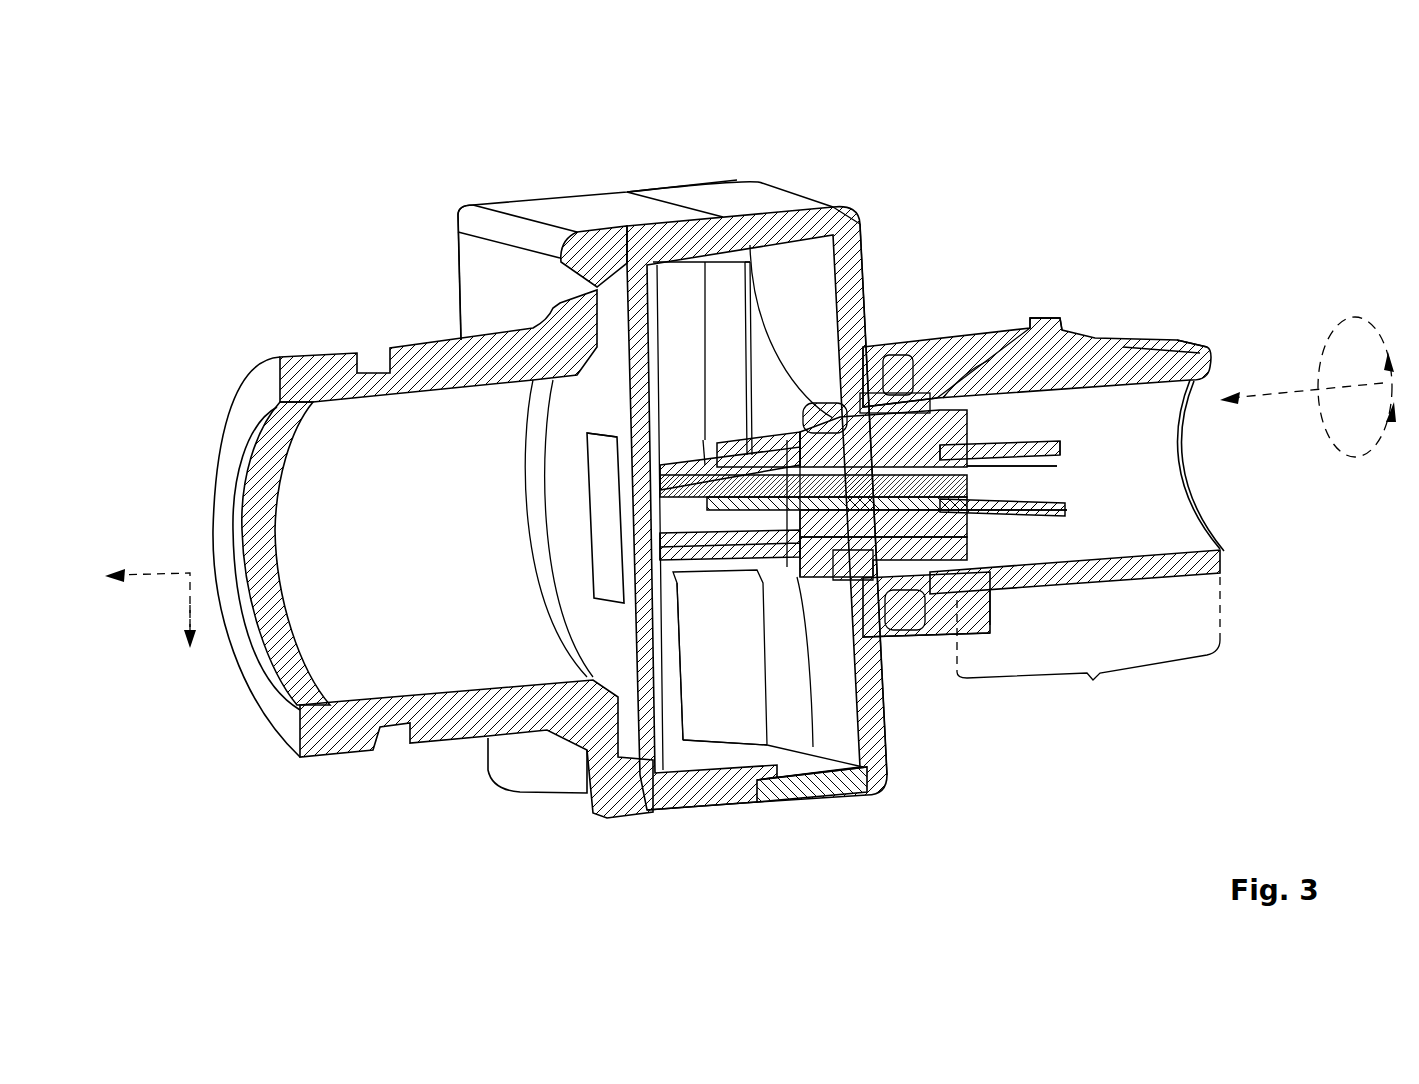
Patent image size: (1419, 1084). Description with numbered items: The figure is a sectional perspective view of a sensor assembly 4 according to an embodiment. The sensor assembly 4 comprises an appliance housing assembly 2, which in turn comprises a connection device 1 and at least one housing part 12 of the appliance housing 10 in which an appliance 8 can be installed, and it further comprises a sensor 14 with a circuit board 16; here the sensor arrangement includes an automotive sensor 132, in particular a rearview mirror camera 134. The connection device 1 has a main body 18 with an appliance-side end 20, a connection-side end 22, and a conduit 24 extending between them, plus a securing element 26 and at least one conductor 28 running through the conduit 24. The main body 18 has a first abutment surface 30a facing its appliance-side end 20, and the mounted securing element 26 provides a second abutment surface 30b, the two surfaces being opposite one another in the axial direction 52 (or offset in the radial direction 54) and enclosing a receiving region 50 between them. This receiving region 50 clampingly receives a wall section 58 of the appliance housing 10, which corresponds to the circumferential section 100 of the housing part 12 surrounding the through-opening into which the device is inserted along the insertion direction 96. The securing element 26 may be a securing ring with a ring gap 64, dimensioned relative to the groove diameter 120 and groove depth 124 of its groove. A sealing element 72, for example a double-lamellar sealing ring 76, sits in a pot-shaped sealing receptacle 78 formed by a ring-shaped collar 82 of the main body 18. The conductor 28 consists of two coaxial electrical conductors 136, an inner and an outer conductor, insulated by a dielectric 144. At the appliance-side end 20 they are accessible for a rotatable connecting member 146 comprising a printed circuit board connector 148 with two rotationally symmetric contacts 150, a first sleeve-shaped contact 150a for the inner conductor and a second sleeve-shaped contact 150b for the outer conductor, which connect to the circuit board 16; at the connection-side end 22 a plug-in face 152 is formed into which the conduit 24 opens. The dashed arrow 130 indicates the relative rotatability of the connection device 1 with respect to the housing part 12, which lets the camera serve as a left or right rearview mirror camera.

The connection device 1 is at (1107, 234).
The appliance housing assembly 2 is at (893, 142).
The sensor assembly 4 is at (166, 133).
The appliance 8 is at (598, 408).
The appliance housing 10 is at (630, 223).
The housing part 12 is at (858, 218).
The sensor 14 is at (286, 553).
The circuit board 16 is at (646, 762).
The main body 18 is at (980, 622).
The appliance-side end 20 is at (783, 368).
The connection-side end 22 is at (1166, 332).
The conduit 24 is at (952, 526).
The securing element 26 is at (752, 262).
The conductor 28 is at (1060, 443).
The first abutment surface 30a is at (900, 360).
The second abutment surface 30b is at (837, 413).
The receiving region 50 is at (1043, 327).
The axial direction 52 is at (157, 571).
The radial direction 54 is at (187, 602).
The wall section 58 is at (863, 307).
The ring gap 64 is at (833, 582).
The sealing element 72 is at (918, 640).
The double-lamellar sealing ring 76 is at (926, 635).
The pot-shaped sealing receptacle 78 is at (953, 357).
The ring-shaped collar 82 is at (900, 402).
The insertion direction 96 is at (1260, 390).
The circumferential section 100 is at (873, 499).
The groove diameter 120 is at (888, 470).
The groove depth 124 is at (1017, 588).
The dashed arrow 130 is at (1363, 318).
The automotive sensor 132 is at (266, 558).
The rearview mirror camera 134 is at (605, 518).
The electrical conductors 136 is at (1067, 503).
The dielectric 144 is at (947, 457).
The rotatable connecting member 146 is at (717, 627).
The printed circuit board connector 148 is at (680, 661).
The contacts 150 is at (705, 465).
The first sleeve-shaped contact 150a is at (704, 452).
The second sleeve-shaped contact 150b is at (813, 480).
The plug-in face 152 is at (1088, 657).